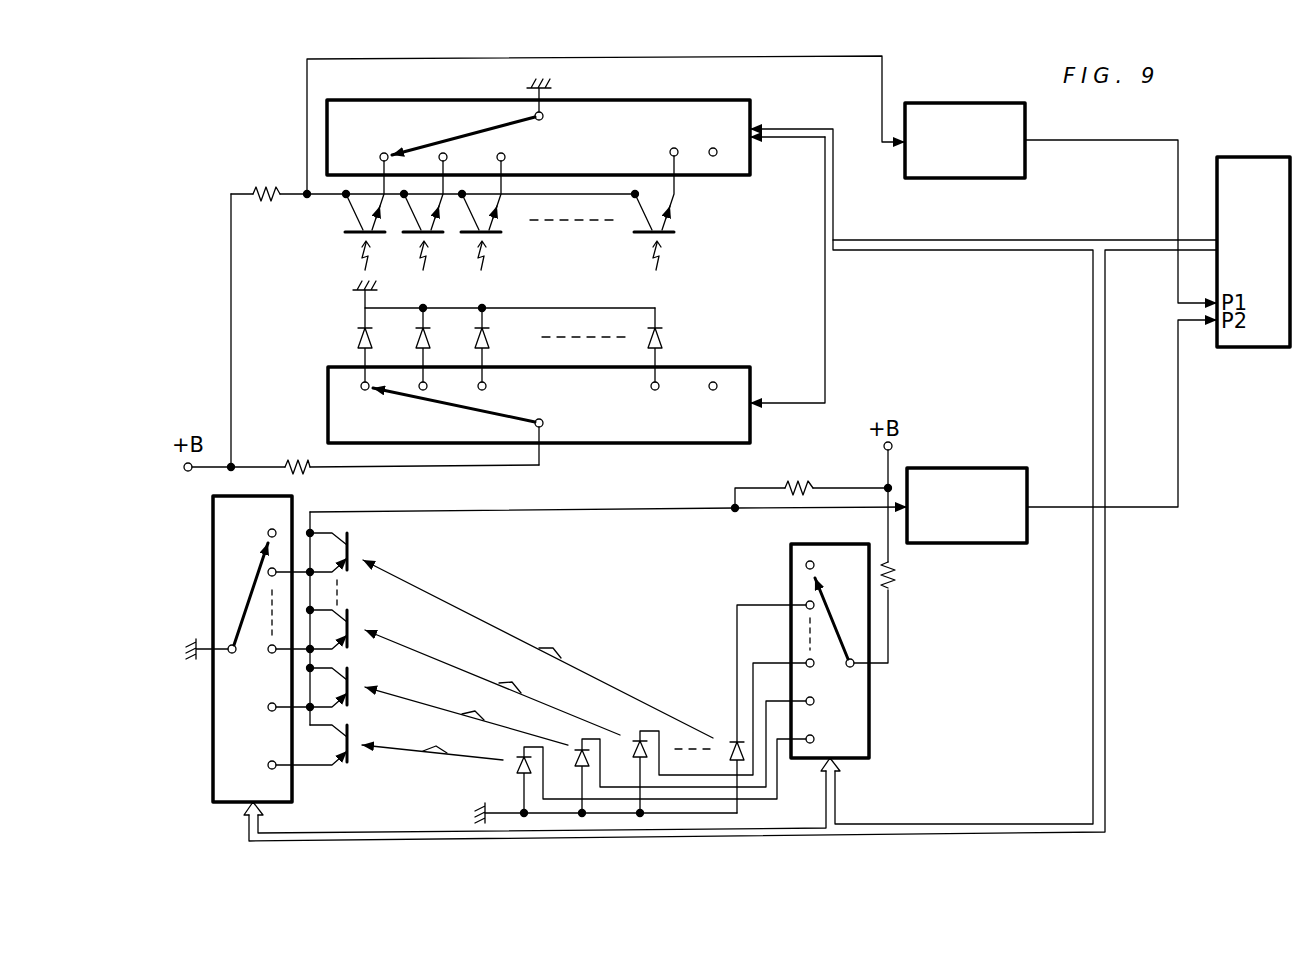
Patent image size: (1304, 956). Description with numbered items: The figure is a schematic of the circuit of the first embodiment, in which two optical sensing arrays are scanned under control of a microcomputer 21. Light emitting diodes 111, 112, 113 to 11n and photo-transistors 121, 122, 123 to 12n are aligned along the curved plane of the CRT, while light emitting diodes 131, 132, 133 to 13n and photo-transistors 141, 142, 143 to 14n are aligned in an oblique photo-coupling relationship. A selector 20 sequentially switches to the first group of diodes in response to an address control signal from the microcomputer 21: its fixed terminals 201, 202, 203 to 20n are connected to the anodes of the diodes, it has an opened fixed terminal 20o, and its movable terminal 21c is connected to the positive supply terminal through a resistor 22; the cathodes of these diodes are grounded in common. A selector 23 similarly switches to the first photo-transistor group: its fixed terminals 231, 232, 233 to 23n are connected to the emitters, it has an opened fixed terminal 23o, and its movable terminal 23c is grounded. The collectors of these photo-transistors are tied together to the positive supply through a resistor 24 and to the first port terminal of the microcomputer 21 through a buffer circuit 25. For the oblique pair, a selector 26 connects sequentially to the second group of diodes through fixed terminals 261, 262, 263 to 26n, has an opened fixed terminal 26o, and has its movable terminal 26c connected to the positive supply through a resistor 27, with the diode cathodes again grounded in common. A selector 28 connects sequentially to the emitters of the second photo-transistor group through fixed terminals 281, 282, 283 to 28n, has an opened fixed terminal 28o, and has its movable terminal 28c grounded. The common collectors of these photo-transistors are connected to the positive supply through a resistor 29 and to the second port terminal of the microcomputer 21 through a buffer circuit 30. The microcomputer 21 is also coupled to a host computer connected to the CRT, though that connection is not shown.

The selector 20 is at (750, 367).
The fixed terminal 201 is at (365, 390).
The fixed terminal 202 is at (427, 386).
The fixed terminal 203 is at (486, 386).
The fixed terminal 20n is at (655, 390).
The opened fixed terminal 20o is at (713, 390).
The microcomputer 21 is at (1280, 157).
The movable terminal 21c is at (543, 423).
The resistor 22 is at (298, 462).
The selector 23 is at (750, 100).
The fixed terminal 231 is at (384, 153).
The fixed terminal 232 is at (447, 157).
The fixed terminal 233 is at (505, 157).
The fixed terminal 23n is at (674, 148).
The opened fixed terminal 23o is at (713, 148).
The movable terminal 23c is at (543, 116).
The resistor 24 is at (266, 190).
The buffer circuit 25 is at (1012, 103).
The selector 26 is at (869, 740).
The fixed terminal 261 is at (814, 739).
The fixed terminal 262 is at (814, 701).
The fixed terminal 263 is at (814, 663).
The fixed terminal 26n is at (814, 605).
The opened fixed terminal 26o is at (814, 565).
The movable terminal 26c is at (850, 659).
The resistor 27 is at (895, 578).
The selector 28 is at (292, 797).
The fixed terminal 281 is at (270, 769).
The fixed terminal 282 is at (272, 711).
The fixed terminal 283 is at (272, 653).
The fixed terminal 28n is at (272, 576).
The opened fixed terminal 28o is at (268, 533).
The movable terminal 28c is at (234, 653).
The resistor 29 is at (800, 484).
The buffer circuit 30 is at (985, 461).
The light emitting diode 111 is at (372, 336).
The light emitting diode 112 is at (430, 336).
The light emitting diode 113 is at (489, 336).
The light emitting diode 11n is at (662, 336).
The photo-transistor 121 is at (370, 234).
The photo-transistor 122 is at (428, 234).
The photo-transistor 123 is at (486, 234).
The photo-transistor 12n is at (660, 234).
The light emitting diode 131 is at (518, 759).
The light emitting diode 132 is at (575, 756).
The light emitting diode 133 is at (633, 748).
The light emitting diode 13n is at (734, 740).
The photo-transistor 141 is at (350, 728).
The photo-transistor 142 is at (350, 670).
The photo-transistor 143 is at (350, 612).
The photo-transistor 14n is at (350, 537).